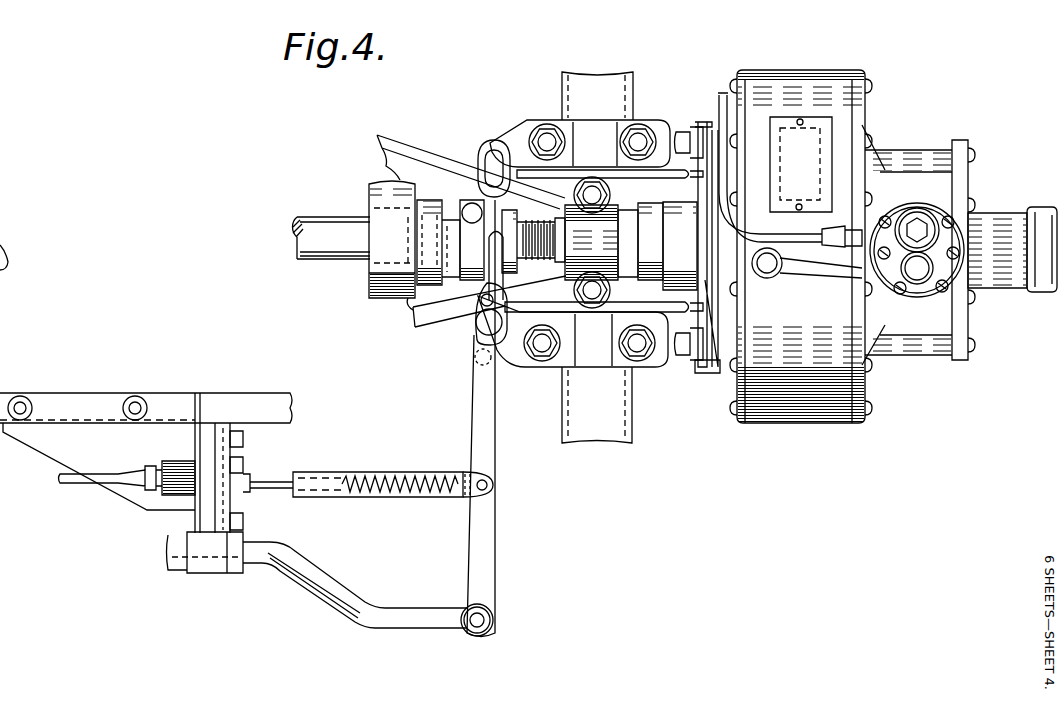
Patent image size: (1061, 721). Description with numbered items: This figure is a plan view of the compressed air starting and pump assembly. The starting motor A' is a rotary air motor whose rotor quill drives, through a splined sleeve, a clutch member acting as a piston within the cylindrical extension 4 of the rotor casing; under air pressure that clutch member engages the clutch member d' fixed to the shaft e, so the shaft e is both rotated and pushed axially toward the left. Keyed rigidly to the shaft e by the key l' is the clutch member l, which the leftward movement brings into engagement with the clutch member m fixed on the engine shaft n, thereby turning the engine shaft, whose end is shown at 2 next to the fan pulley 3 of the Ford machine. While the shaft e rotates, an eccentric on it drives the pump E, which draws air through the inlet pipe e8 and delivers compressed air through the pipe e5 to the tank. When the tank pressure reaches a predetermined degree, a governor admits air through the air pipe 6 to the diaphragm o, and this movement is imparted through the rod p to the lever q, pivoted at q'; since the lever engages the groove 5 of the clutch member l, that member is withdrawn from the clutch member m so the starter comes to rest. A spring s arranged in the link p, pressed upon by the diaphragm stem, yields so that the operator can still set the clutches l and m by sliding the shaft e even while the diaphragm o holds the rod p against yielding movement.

The engine shaft n is at (321, 224).
The end of engine shaft 2 is at (408, 233).
The fan pulley 3 is at (368, 288).
The clutch member m is at (432, 270).
The clutch member l is at (464, 229).
The groove 5 is at (481, 190).
The key l' is at (533, 224).
The shaft e is at (628, 242).
The clutch member d' is at (650, 241).
The extension of rotor casing 4 is at (680, 246).
The pipe e5 is at (798, 240).
The inlet pipe e8 is at (815, 265).
The starting motor A' is at (801, 270).
The pump E is at (913, 332).
The air pipe 6 is at (100, 480).
The diaphragm o is at (246, 454).
The lever q is at (462, 418).
The spring s is at (427, 475).
The rod p is at (362, 493).
The pivot q' is at (498, 624).